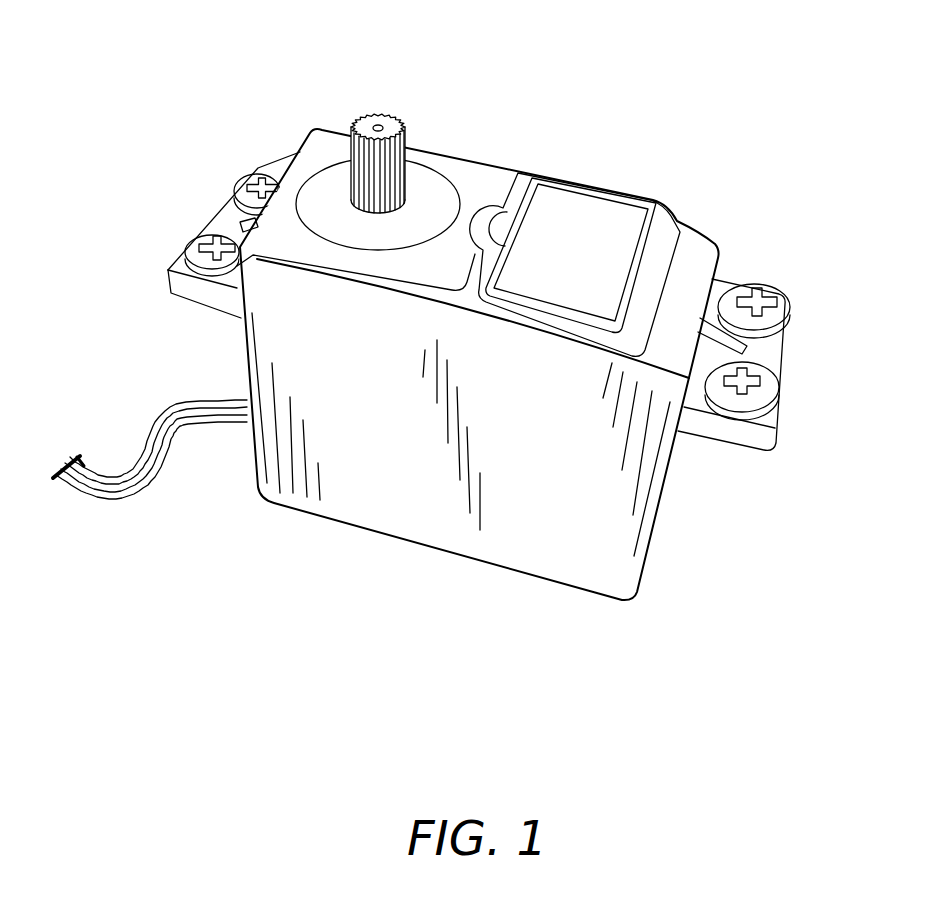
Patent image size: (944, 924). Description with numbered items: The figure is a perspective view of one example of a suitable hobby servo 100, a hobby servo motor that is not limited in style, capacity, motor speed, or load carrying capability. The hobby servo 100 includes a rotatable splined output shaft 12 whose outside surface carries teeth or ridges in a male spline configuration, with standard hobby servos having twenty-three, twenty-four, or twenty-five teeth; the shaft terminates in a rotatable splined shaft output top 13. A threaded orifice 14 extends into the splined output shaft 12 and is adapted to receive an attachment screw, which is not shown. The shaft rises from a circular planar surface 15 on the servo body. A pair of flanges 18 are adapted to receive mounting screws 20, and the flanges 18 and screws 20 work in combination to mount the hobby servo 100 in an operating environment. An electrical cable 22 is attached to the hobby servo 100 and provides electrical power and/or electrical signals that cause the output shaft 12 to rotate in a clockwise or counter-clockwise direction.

The hobby servo 100 is at (345, 634).
The splined output shaft 12 is at (432, 203).
The splined shaft output top 13 is at (392, 124).
The threaded orifice 14 is at (372, 126).
The circular planar surface 15 is at (443, 190).
The flanges 18 is at (203, 297).
The mounting screws 20 is at (242, 190).
The electrical cable 22 is at (133, 490).